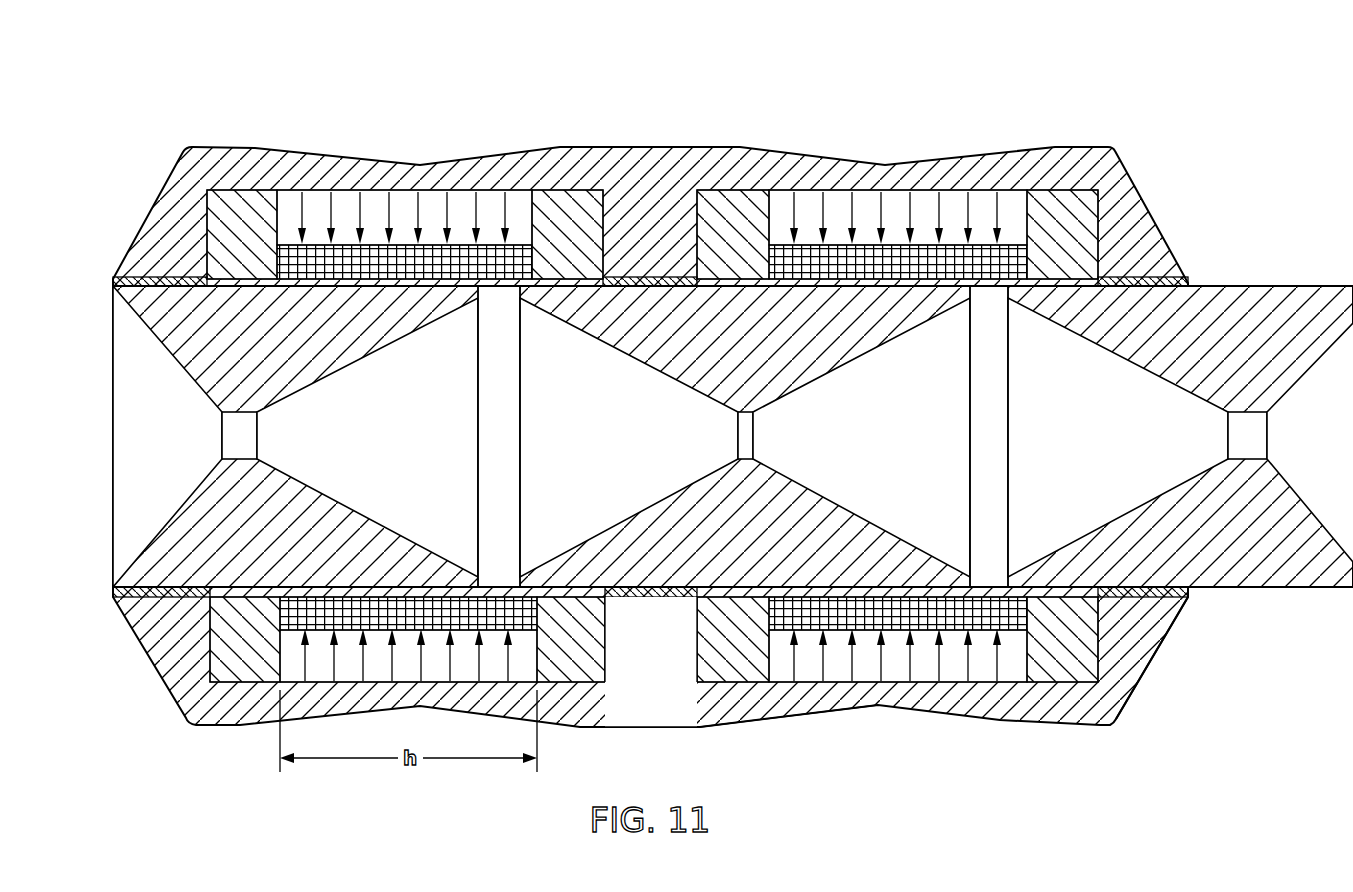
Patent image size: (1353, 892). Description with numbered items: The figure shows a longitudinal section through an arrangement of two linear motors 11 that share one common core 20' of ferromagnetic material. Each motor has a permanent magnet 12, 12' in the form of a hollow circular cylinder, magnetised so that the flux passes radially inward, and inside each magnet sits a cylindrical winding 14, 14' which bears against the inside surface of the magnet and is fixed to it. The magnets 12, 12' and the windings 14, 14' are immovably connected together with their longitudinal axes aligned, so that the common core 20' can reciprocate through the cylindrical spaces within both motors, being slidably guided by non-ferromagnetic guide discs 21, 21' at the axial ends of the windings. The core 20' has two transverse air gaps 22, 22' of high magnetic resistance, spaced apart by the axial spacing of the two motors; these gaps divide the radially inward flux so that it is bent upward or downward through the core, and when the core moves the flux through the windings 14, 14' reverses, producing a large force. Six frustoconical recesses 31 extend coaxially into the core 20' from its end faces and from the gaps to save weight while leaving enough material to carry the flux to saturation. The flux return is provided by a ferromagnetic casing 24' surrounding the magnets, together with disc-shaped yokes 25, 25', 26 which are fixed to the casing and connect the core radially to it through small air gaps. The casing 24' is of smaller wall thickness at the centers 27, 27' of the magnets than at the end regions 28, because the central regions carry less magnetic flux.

The electric motor 11 is at (362, 115).
The permanent magnet 12 is at (377, 436).
The permanent magnet 12' is at (898, 436).
The winding 14 is at (440, 673).
The winding 14' is at (898, 684).
The common core 20' is at (733, 392).
The guide disc 21 is at (362, 391).
The guide disc 21' is at (897, 391).
The air gap 22 is at (558, 529).
The air gap 22' is at (979, 529).
The casing 24' is at (729, 738).
The yoke 25 is at (650, 679).
The yoke 25' is at (660, 684).
The yoke 26 is at (1133, 665).
The center of the axial length of the permanent magnet 27 is at (404, 189).
The center of the axial length of the permanent magnet 27' is at (898, 189).
The end region 28 is at (228, 162).
The frustoconical recess 31 is at (143, 452).